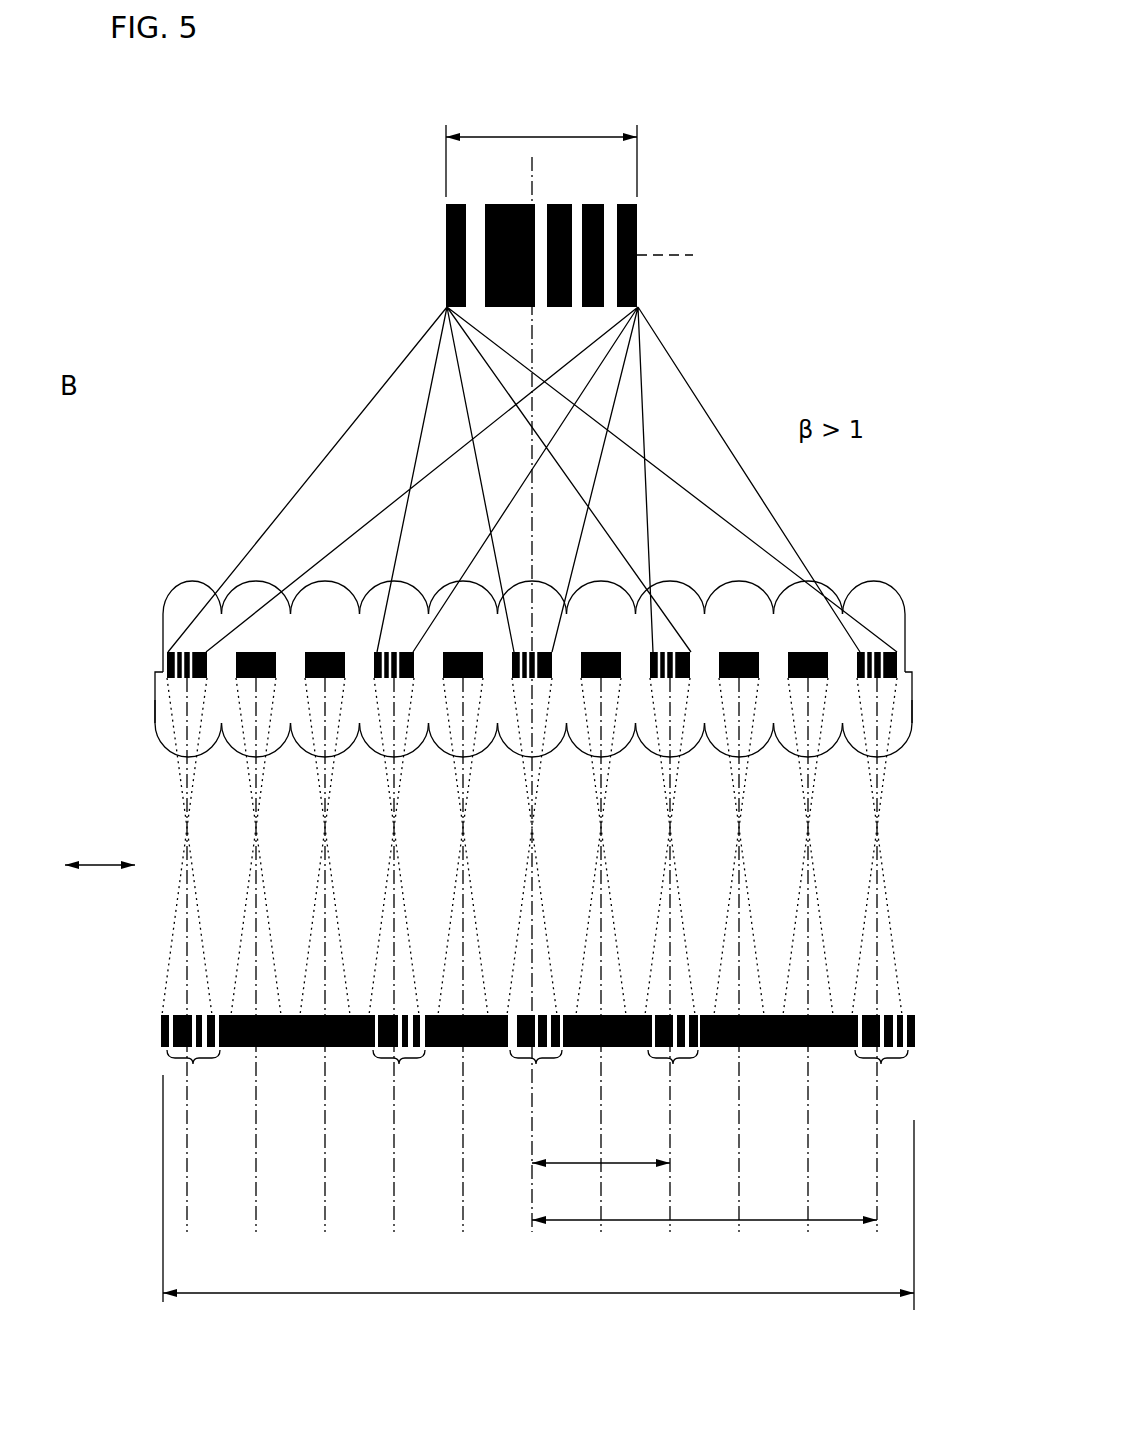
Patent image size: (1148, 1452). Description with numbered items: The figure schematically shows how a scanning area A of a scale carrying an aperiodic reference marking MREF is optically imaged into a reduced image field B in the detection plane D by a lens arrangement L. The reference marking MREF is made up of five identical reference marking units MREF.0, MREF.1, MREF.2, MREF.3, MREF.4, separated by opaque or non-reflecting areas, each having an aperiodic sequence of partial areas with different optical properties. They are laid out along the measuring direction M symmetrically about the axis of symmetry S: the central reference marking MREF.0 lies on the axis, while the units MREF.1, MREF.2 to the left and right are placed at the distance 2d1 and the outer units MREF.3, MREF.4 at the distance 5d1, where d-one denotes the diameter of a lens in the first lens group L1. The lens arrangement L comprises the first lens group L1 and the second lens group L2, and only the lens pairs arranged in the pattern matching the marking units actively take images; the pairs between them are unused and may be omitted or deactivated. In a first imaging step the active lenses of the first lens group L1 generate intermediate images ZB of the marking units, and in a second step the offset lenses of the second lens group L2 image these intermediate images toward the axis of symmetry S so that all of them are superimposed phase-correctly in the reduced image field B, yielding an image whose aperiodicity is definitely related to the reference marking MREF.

The detection plane D is at (446, 255).
The reduced image field B is at (541, 150).
The second lens group L2 is at (152, 622).
The intermediate image ZB is at (84, 672).
The lens arrangement L is at (138, 715).
The first lens group L1 is at (152, 741).
The measuring direction M is at (100, 841).
The aperiodic reference marking MREF is at (155, 1036).
The central reference marking MREF.0 is at (554, 1077).
The reference marking unit MREF.1 is at (416, 1077).
The reference marking unit MREF.2 is at (692, 1077).
The reference marking unit MREF.3 is at (210, 1077).
The reference marking unit MREF.4 is at (899, 1077).
The distance 2d1 is at (601, 1146).
The distance 5d1 is at (704, 1203).
The scanning area A is at (538, 1192).
The axis of symmetry S is at (532, 1190).